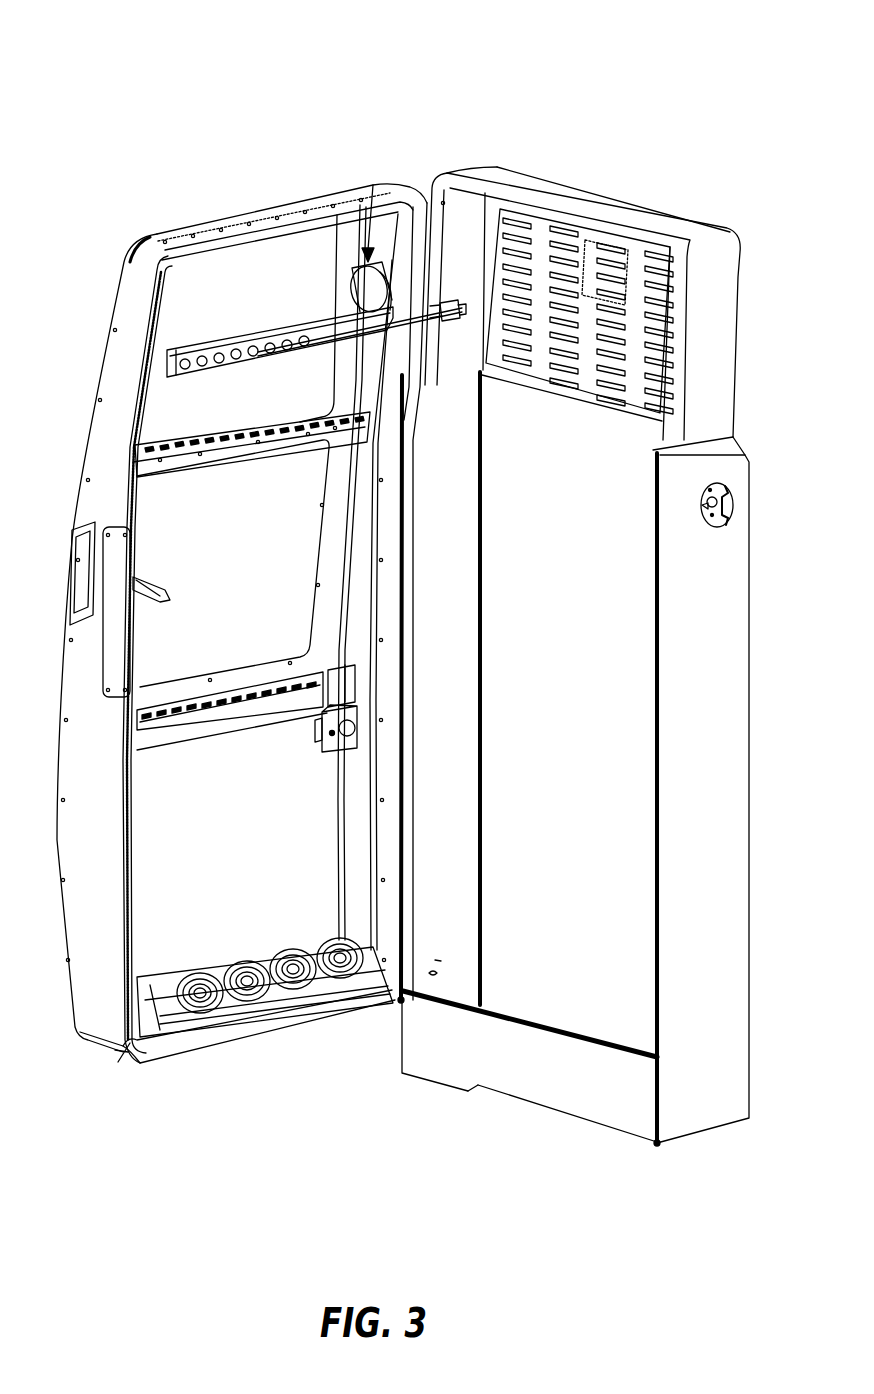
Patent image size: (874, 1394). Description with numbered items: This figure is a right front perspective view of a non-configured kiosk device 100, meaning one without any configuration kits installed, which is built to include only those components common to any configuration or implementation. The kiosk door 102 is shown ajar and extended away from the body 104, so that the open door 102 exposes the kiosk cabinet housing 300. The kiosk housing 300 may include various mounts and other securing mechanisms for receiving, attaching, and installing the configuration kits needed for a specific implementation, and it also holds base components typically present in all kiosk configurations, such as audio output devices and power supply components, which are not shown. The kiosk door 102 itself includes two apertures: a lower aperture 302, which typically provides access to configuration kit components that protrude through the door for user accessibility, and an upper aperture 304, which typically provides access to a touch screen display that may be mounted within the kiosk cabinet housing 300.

The kiosk device 100 is at (546, 70).
The kiosk door 102 is at (104, 347).
The body 104 is at (742, 607).
The kiosk cabinet housing 300 is at (627, 873).
The lower aperture 302 is at (233, 563).
The upper aperture 304 is at (299, 331).